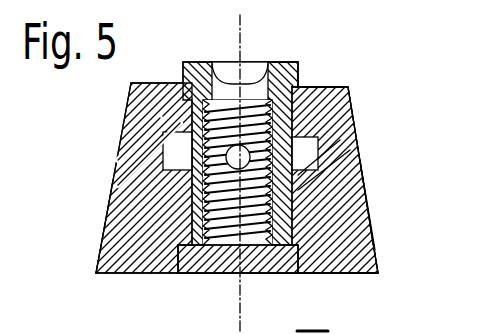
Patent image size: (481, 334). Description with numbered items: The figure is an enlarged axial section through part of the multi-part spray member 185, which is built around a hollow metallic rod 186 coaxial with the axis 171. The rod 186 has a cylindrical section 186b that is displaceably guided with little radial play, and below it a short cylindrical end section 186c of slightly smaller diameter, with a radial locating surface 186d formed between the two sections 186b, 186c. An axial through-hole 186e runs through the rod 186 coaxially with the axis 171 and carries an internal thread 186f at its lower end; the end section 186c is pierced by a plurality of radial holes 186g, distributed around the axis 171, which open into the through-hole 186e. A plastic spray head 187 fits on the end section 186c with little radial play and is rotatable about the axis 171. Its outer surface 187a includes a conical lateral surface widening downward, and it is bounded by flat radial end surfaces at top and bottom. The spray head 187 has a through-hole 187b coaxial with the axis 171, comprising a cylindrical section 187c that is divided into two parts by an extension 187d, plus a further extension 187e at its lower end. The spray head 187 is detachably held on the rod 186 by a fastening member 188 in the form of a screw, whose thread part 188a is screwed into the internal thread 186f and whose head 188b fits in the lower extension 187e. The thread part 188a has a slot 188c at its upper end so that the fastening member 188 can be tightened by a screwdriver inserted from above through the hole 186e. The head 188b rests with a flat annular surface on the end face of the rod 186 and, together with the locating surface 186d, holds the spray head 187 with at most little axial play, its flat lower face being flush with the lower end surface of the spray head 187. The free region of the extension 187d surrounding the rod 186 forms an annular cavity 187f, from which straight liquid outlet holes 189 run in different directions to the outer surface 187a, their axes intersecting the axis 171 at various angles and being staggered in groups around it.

The axis 171 is at (237, 291).
The spray member 185 is at (120, 100).
The rod 186 is at (183, 62).
The cylindrical section 186b is at (296, 87).
The end section 186c is at (348, 97).
The radial locating surface 186d is at (340, 85).
The through-hole 186e is at (213, 83).
The internal thread 186f is at (262, 63).
The radial hole 186g is at (320, 182).
The spray head 187 is at (113, 165).
The outer surface 187a is at (107, 195).
The through-hole 187b is at (378, 266).
The cylindrical section 187c is at (368, 222).
The extension 187d is at (353, 157).
The extension 187e is at (350, 280).
The annular cavity 187f is at (100, 277).
The fastening member 188 is at (250, 280).
The thread part 188a is at (372, 242).
The head 188b is at (277, 278).
The slot 188c is at (177, 275).
The liquid outlet holes 189 is at (124, 128).